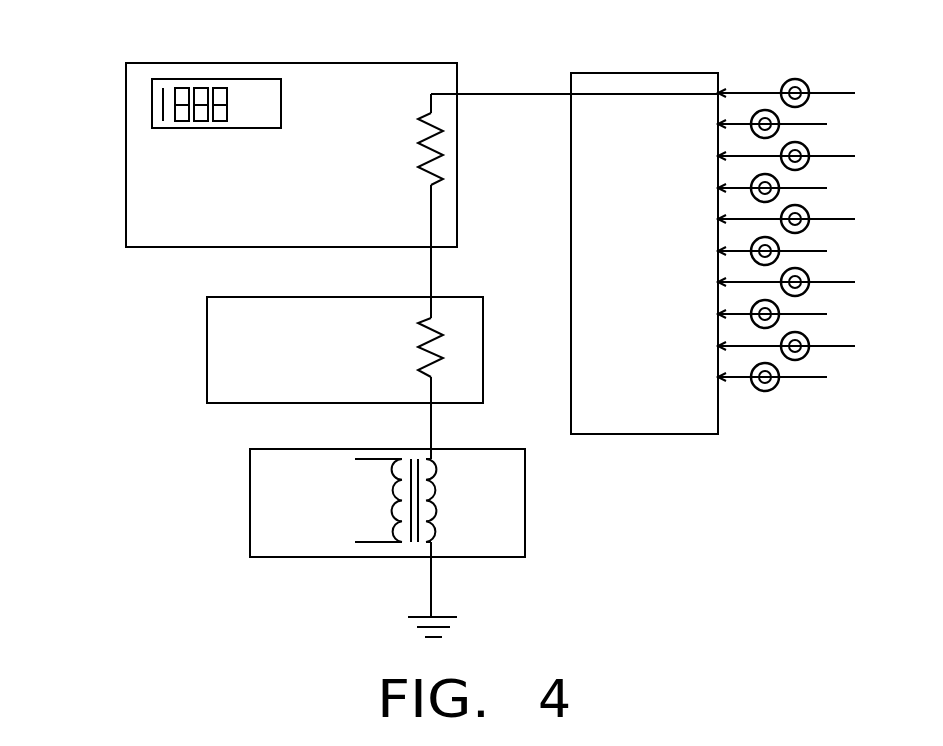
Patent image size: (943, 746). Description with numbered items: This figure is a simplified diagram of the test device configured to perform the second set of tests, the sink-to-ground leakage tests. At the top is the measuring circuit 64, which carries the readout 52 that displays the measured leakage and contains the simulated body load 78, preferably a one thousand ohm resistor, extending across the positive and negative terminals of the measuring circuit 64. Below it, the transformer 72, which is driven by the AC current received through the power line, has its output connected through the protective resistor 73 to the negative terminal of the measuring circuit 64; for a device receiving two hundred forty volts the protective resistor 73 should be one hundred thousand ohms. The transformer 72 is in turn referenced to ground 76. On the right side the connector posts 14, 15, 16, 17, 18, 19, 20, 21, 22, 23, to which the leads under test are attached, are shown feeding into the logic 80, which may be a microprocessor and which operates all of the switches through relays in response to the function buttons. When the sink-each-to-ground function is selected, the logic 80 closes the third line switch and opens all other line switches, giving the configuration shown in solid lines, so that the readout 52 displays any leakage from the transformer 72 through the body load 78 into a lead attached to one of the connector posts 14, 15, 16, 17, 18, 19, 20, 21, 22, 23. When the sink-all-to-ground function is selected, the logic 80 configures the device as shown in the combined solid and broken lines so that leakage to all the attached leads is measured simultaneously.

The connector post 14 is at (807, 93).
The connector post 15 is at (791, 124).
The connector post 16 is at (807, 156).
The connector post 17 is at (791, 188).
The connector post 18 is at (807, 219).
The connector post 19 is at (791, 251).
The connector post 20 is at (807, 282).
The connector post 21 is at (791, 314).
The connector post 22 is at (807, 346).
The connector post 23 is at (791, 377).
The readout 52 is at (152, 100).
The measuring circuit 64 is at (300, 230).
The transformer 72 is at (326, 535).
The protective resistor 73 is at (353, 382).
The ground 76 is at (457, 632).
The simulated body load 78 is at (405, 115).
The logic 80 is at (644, 253).